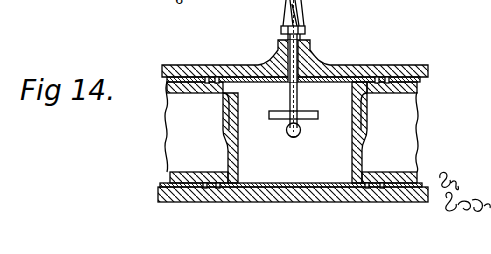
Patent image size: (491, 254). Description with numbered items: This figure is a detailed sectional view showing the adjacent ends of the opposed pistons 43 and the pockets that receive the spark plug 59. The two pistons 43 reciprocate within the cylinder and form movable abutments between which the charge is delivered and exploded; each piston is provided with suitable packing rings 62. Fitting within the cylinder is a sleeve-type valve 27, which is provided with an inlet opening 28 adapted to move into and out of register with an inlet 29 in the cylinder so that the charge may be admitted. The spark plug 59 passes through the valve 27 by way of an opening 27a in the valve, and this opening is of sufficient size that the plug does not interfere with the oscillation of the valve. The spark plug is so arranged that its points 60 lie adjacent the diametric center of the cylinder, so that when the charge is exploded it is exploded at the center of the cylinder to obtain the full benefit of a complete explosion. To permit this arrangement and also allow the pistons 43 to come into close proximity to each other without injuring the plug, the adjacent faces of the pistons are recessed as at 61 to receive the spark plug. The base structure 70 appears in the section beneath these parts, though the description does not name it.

The pistons 43 is at (176, 80).
The packing rings 62 is at (217, 78).
The recesses 61 is at (241, 72).
The spark plug 59 is at (305, 21).
The valve 27 is at (330, 73).
The opening in the valve 27a is at (289, 96).
The inlet opening 28 is at (315, 118).
The inlet 29 is at (286, 132).
The points 60 is at (297, 140).
The base plate 70 is at (203, 197).